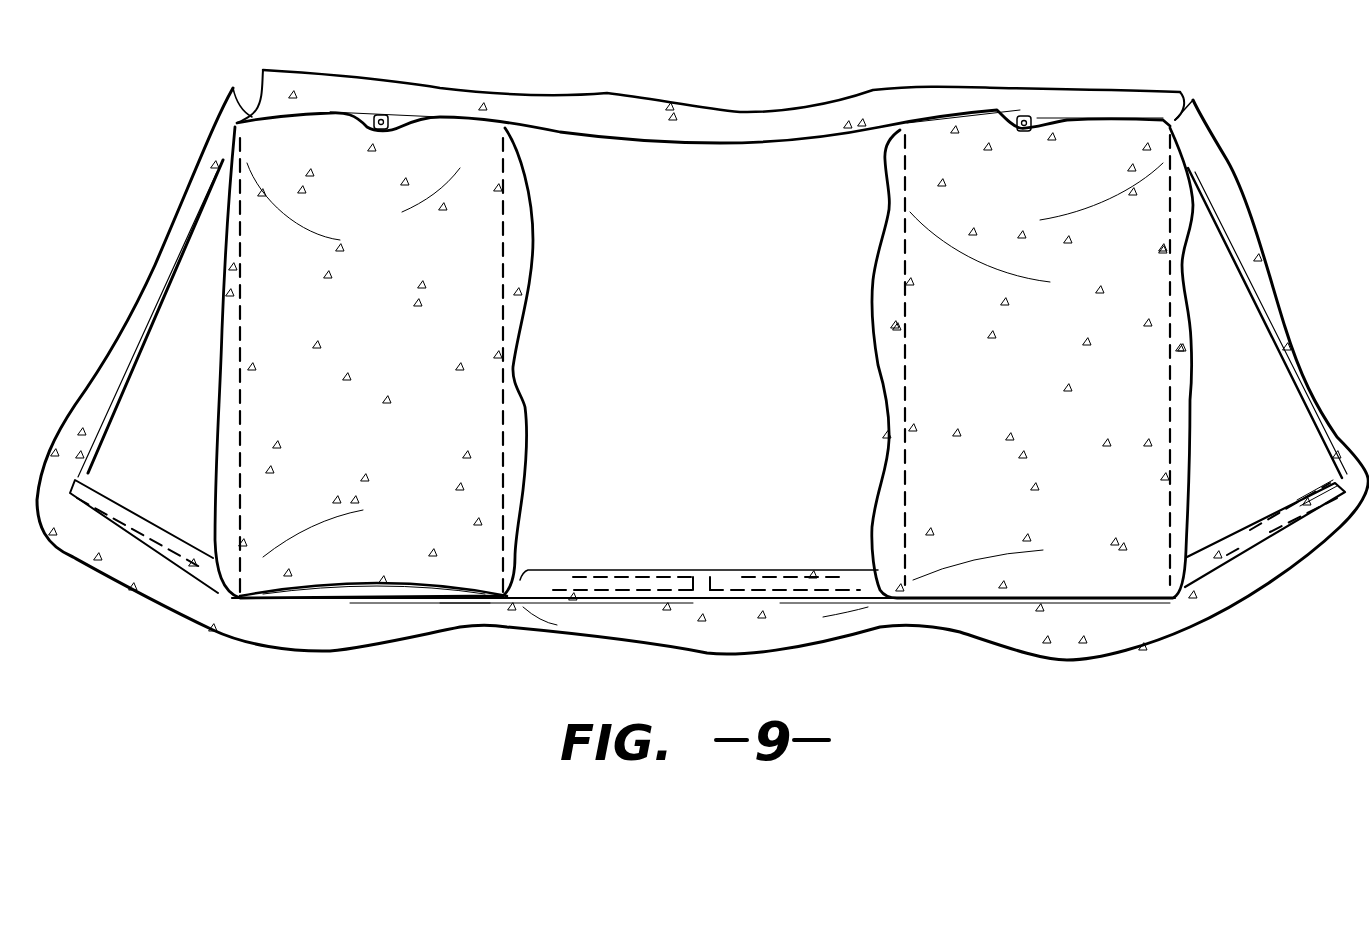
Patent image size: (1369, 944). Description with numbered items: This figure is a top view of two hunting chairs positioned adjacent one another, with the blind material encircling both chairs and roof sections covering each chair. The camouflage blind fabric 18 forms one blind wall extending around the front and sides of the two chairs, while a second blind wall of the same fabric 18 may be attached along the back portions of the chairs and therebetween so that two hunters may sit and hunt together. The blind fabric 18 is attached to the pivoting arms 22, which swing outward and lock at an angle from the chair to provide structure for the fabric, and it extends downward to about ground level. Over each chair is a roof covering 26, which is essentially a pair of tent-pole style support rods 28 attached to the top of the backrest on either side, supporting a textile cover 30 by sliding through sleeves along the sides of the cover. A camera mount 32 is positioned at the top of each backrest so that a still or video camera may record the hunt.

The camouflage blind fabric 18 is at (623, 105).
The pivoting arms 22 is at (117, 520).
The roof covering 26 is at (509, 243).
The support rods 28 is at (242, 473).
The textile cover 30 is at (257, 387).
The camera mount 32 is at (370, 120).